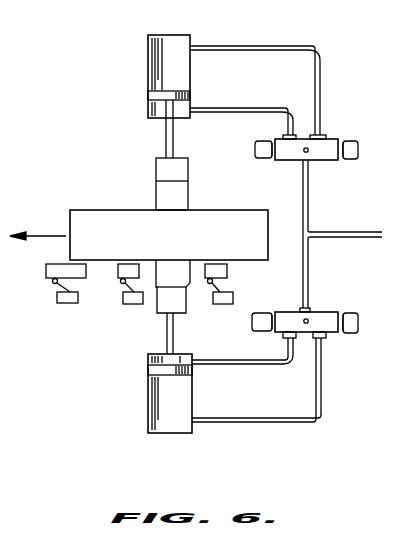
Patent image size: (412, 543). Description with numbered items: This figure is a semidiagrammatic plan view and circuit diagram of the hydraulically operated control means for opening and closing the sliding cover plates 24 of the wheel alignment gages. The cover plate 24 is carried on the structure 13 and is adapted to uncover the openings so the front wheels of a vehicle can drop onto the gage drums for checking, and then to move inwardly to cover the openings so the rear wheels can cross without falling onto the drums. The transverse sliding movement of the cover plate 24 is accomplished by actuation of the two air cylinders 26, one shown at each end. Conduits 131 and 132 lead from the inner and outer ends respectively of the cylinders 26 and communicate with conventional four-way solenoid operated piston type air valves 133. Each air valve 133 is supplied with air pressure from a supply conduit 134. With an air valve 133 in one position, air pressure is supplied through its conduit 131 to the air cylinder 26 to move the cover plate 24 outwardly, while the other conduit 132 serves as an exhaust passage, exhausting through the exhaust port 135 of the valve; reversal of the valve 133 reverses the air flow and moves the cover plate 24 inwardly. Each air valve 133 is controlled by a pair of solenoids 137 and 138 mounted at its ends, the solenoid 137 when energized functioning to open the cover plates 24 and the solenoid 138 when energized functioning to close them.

The platform / carriage 13 is at (97, 211).
The cover plate 24 is at (180, 193).
The air cylinder 26 is at (168, 68).
The conduit 131 is at (216, 109).
The conduit 132 is at (268, 47).
The air valve 133 is at (335, 142).
The supply conduit 134 is at (338, 233).
The exhaust port 135 is at (308, 152).
The solenoid 137 is at (352, 150).
The solenoid 138 is at (258, 141).